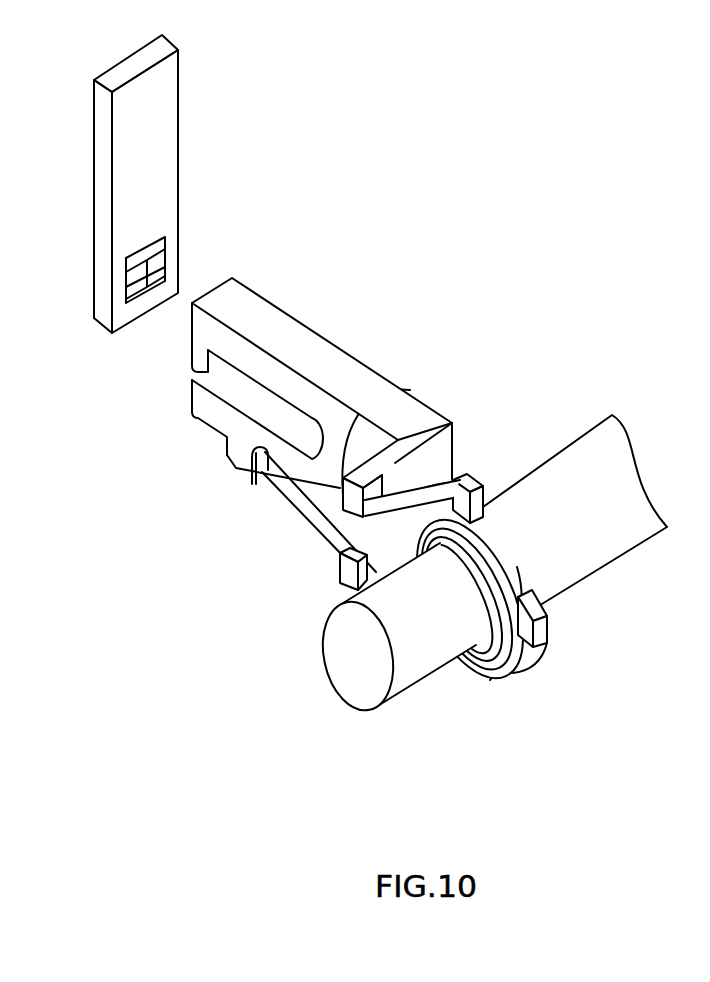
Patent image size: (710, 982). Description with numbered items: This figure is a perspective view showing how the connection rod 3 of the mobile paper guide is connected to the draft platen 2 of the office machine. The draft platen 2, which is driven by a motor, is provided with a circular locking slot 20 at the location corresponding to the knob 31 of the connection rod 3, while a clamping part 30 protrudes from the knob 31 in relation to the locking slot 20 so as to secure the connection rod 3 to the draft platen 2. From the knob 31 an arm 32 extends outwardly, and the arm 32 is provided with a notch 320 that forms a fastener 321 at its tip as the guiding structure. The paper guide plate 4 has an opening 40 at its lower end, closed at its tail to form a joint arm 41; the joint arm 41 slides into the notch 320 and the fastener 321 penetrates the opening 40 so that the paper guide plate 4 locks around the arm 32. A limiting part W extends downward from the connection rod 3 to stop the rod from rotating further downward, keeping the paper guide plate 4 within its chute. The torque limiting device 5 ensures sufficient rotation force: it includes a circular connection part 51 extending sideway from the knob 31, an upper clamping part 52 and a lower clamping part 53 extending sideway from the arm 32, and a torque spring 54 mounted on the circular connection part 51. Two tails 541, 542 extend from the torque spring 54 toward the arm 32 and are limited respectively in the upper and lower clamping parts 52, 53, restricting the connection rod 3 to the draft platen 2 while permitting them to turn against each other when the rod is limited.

The draft platen 2 is at (355, 680).
The connection rod 3 is at (330, 373).
The paper guide plate 4 is at (207, 133).
The opening 40 is at (150, 258).
The joint arm 41 is at (145, 308).
The clamping part 30 is at (492, 523).
The circular locking slot 20 is at (520, 620).
The knob 31 is at (473, 478).
The arm 32 is at (276, 372).
The notch 320 is at (248, 400).
The fastener 321 is at (232, 305).
The upper clamping part 52 is at (400, 394).
The limiting part W is at (237, 458).
The torque limiting device 5 is at (390, 613).
The circular connection part 51 is at (482, 667).
The lower clamping part 53 is at (343, 578).
The torque spring 54 is at (530, 645).
The tail 541 is at (252, 476).
The tail 542 is at (258, 503).